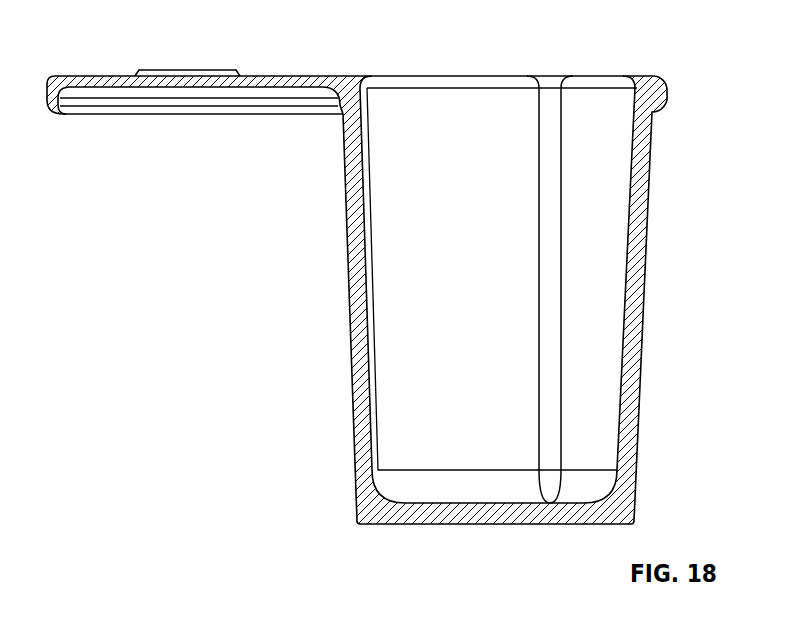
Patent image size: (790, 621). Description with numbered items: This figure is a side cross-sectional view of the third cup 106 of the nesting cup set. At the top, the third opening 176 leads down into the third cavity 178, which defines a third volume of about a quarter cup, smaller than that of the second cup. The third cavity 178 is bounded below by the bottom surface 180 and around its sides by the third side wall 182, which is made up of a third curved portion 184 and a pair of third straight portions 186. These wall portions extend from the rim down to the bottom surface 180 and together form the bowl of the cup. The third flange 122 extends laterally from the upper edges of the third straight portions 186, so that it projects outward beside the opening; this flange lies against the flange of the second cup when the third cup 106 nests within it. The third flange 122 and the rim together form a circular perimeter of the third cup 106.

The third cup 106 is at (659, 40).
The third flange 122 is at (97, 77).
The third opening 176 is at (448, 73).
The third cavity 178 is at (402, 127).
The bottom surface 180 is at (492, 513).
The third side wall 182 is at (624, 386).
The third curved portion 184 is at (634, 184).
The third straight portions 186 is at (352, 323).